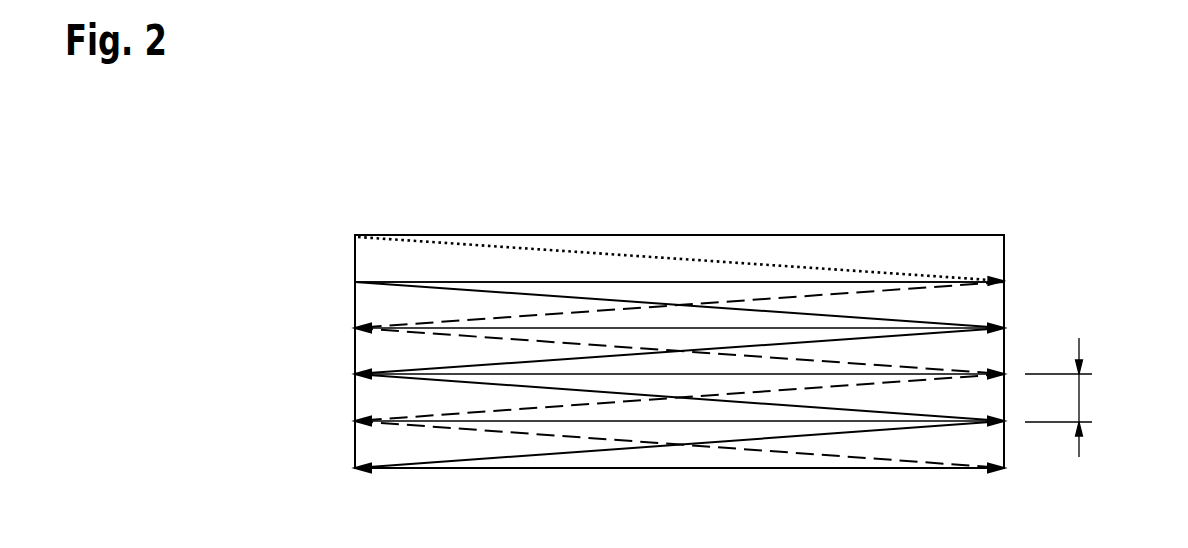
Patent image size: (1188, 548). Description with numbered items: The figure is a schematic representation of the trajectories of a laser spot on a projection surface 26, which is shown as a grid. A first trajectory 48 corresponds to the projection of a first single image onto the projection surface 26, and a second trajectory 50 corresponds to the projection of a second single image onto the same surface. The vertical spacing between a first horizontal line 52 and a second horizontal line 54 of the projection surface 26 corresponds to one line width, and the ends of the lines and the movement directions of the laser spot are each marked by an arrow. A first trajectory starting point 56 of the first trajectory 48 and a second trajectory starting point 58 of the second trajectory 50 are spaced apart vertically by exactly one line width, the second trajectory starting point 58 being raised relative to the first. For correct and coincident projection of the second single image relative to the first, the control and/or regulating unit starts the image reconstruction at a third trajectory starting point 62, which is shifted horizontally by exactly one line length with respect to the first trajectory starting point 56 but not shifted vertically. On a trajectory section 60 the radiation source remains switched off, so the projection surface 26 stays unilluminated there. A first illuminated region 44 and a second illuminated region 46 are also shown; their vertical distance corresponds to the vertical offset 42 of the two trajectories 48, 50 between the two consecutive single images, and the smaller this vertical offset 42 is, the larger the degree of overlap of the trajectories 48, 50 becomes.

The projection surface 26 is at (990, 308).
The vertical offset 42 is at (1079, 398).
The first illuminated region 44 is at (1004, 374).
The second illuminated region 46 is at (1004, 422).
The first trajectory 48 is at (548, 458).
The second trajectory 50 is at (810, 455).
The first horizontal line 52 is at (718, 281).
The second horizontal line 54 is at (643, 328).
The first trajectory starting point 56 is at (354, 281).
The second trajectory starting point 58 is at (354, 235).
The trajectory section 60 is at (812, 266).
The third trajectory starting point 62 is at (1004, 281).